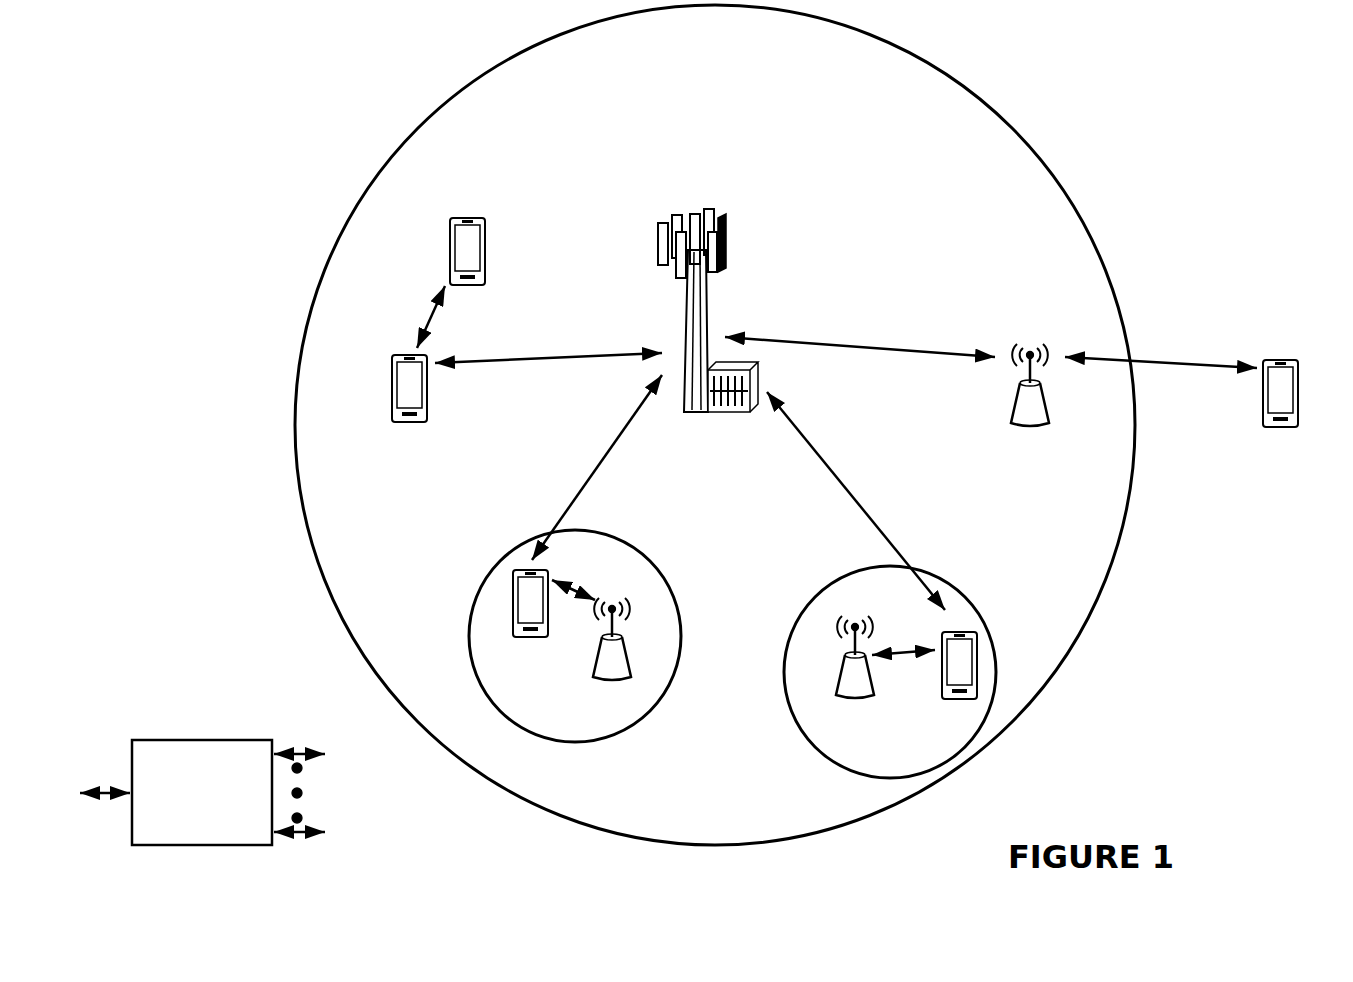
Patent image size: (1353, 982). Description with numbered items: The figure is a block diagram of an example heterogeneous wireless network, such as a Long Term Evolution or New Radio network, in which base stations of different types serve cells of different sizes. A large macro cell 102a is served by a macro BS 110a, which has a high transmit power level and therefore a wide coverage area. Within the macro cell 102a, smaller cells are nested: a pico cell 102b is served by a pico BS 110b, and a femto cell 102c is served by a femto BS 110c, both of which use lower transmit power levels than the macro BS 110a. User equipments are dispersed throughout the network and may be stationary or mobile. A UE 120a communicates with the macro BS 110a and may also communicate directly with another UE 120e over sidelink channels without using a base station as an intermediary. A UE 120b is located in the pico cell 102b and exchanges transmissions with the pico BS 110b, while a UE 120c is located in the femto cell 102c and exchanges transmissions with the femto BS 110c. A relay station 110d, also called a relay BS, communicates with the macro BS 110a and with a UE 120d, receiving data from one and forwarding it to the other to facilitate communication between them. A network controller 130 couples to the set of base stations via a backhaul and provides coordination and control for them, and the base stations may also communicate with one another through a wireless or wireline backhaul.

The macro cell 102a is at (993, 110).
The macro BS 110a is at (701, 205).
The UE 120a is at (392, 386).
The UE 120e is at (452, 238).
The relay station 110d is at (1030, 348).
The UE 120d is at (1290, 360).
The pico cell 102b is at (665, 577).
The pico BS 110b is at (630, 662).
The UE 120b is at (518, 640).
The femto cell 102c is at (830, 585).
The femto BS 110c is at (840, 680).
The UE 120c is at (945, 698).
The network controller 130 is at (200, 740).